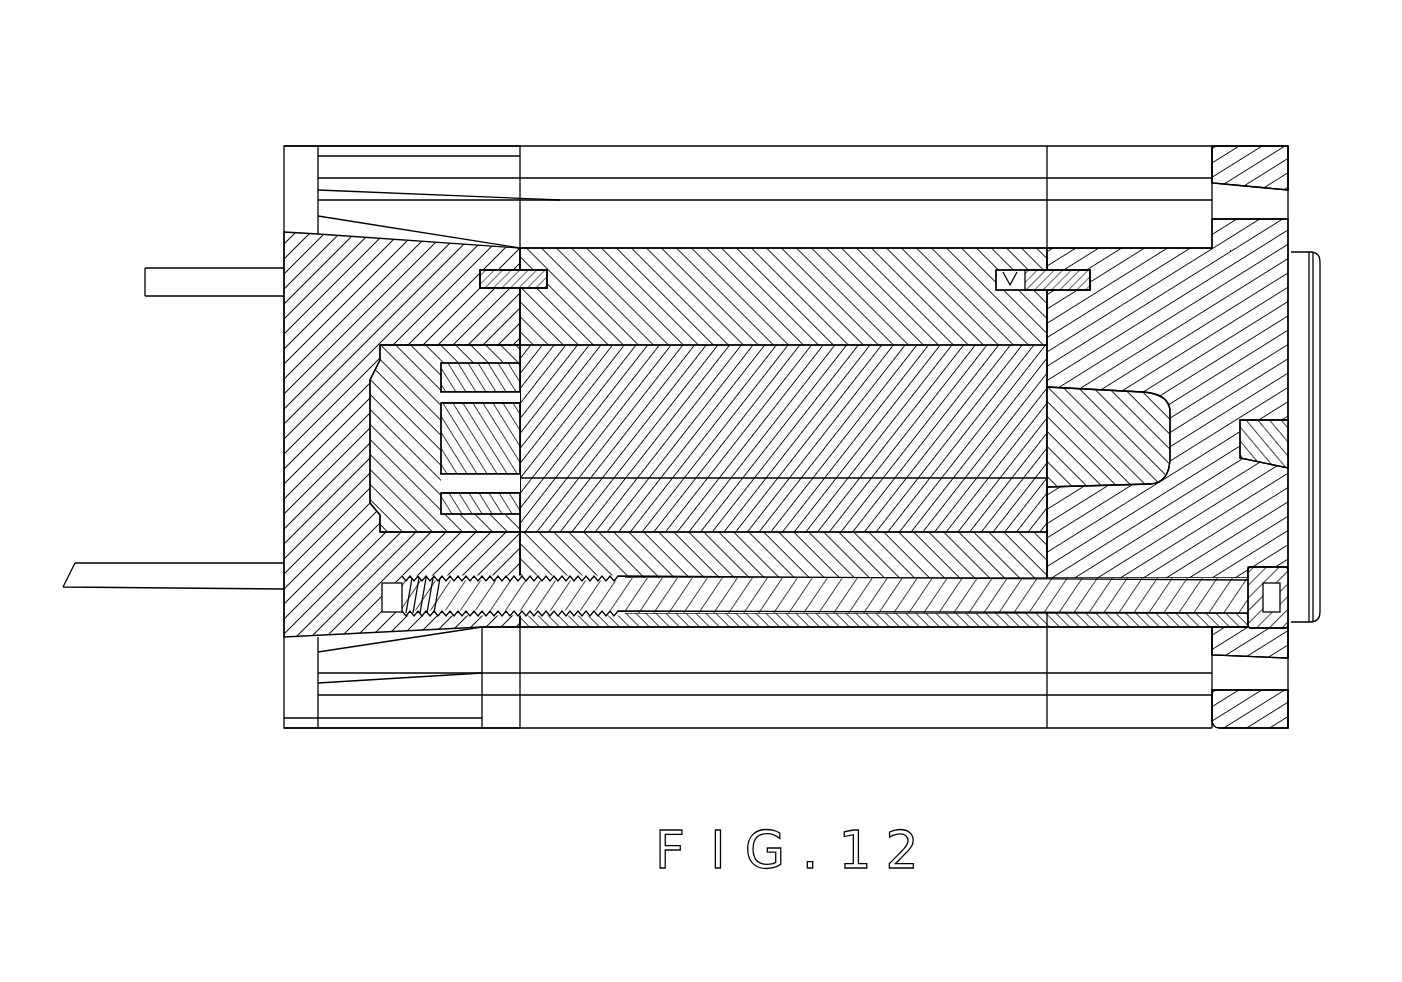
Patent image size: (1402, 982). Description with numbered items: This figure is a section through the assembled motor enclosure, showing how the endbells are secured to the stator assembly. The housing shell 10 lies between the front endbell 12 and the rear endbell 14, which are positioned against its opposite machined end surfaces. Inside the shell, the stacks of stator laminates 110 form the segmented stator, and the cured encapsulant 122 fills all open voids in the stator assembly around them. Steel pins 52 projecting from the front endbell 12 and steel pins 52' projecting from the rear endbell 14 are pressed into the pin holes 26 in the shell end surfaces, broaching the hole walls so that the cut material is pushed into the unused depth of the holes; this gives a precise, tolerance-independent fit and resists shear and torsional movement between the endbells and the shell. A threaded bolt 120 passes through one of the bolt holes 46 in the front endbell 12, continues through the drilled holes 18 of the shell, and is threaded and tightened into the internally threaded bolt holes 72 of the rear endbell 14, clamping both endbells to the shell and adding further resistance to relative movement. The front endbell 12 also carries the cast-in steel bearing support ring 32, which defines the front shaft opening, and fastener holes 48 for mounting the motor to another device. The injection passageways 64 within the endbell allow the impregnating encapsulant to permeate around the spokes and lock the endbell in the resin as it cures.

The housing shell 10 is at (718, 146).
The front endbell 12 is at (1165, 146).
The rear endbell 14 is at (366, 146).
The drilled holes 18 is at (878, 570).
The pin holes 26 is at (562, 272).
The bearing support ring 32 is at (1298, 603).
The bolt holes 46 is at (1090, 573).
The fastener holes 48 is at (1261, 190).
The steel pins 52 is at (1052, 192).
The steel pins 52' is at (513, 188).
The injection passageways 64 is at (1128, 426).
The internally threaded bolt holes 72 is at (430, 613).
The stator laminates 110 is at (820, 345).
The threaded bolts 120 is at (703, 610).
The cured encapsulant 122 is at (1270, 447).